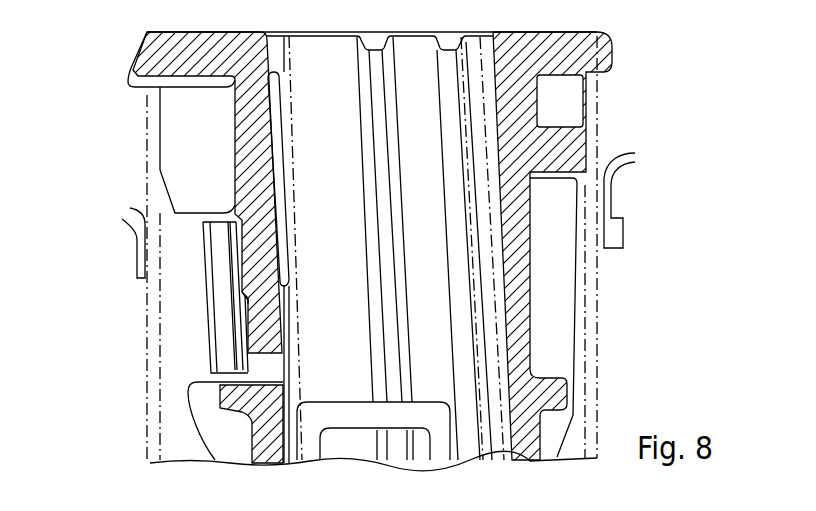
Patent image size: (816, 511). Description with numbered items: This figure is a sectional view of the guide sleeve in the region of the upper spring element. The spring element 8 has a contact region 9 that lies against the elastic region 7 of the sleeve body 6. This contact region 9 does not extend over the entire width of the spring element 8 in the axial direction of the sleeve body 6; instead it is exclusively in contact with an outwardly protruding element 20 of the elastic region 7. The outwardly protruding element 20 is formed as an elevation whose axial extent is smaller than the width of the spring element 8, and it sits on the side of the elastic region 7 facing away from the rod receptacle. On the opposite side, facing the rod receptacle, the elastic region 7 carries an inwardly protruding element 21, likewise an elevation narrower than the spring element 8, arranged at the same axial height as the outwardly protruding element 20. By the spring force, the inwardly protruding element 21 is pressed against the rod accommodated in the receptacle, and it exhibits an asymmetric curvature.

The sleeve body 6 is at (163, 53).
The elastic region 7 is at (230, 259).
The spring element 8 is at (222, 340).
The contact region 9 is at (246, 295).
The outwardly protruding element 20 is at (240, 288).
The inwardly protruding element 21 is at (285, 291).